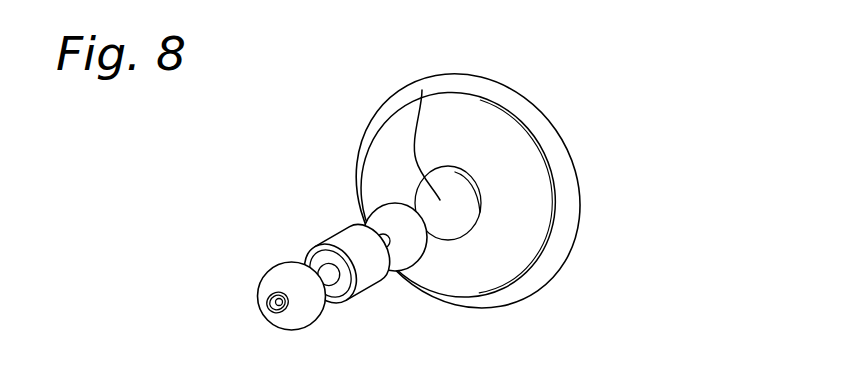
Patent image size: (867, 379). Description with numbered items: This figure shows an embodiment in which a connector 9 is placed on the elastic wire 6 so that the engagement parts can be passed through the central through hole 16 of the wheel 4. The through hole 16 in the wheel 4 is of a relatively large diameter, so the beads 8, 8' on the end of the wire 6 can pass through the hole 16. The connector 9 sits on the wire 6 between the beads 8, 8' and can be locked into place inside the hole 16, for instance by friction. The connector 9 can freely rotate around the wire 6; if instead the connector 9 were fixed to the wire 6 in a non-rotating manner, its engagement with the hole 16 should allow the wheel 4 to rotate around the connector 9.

The wheel 4 is at (508, 178).
The through hole 16 is at (422, 90).
The bead 8' is at (373, 217).
The connector 9 is at (364, 279).
The elastic wire 6 is at (322, 273).
The bead 8 is at (274, 296).